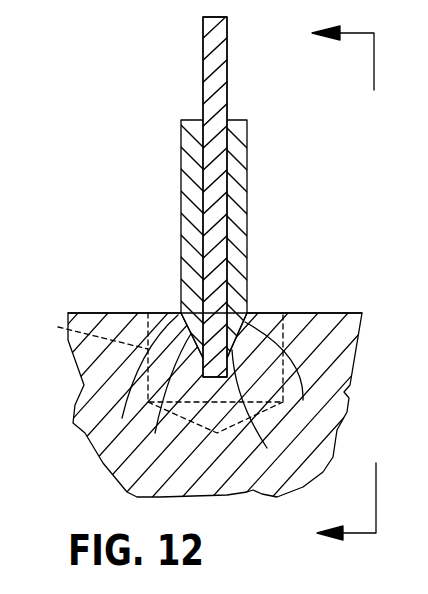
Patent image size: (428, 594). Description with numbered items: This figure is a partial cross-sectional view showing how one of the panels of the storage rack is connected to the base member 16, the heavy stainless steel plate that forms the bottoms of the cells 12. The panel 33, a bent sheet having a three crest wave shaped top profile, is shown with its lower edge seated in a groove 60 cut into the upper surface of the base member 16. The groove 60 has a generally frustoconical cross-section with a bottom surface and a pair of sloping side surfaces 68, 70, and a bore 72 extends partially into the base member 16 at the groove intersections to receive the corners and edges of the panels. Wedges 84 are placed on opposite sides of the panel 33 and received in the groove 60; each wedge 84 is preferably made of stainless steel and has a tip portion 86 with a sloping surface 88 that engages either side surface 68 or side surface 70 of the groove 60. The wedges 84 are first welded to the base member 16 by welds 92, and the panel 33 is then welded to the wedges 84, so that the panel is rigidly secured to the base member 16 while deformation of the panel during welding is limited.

The cell 12 is at (330, 285).
The base member 16 is at (74, 300).
The panel 33 is at (203, 60).
The groove 60 is at (278, 307).
The side surface 68 is at (159, 393).
The side surface 70 is at (264, 404).
The bore 72 is at (158, 373).
The wedge 84 is at (172, 161).
The tip portion 86 is at (135, 313).
The sloping surface 88 is at (216, 369).
The weld 92 is at (179, 306).